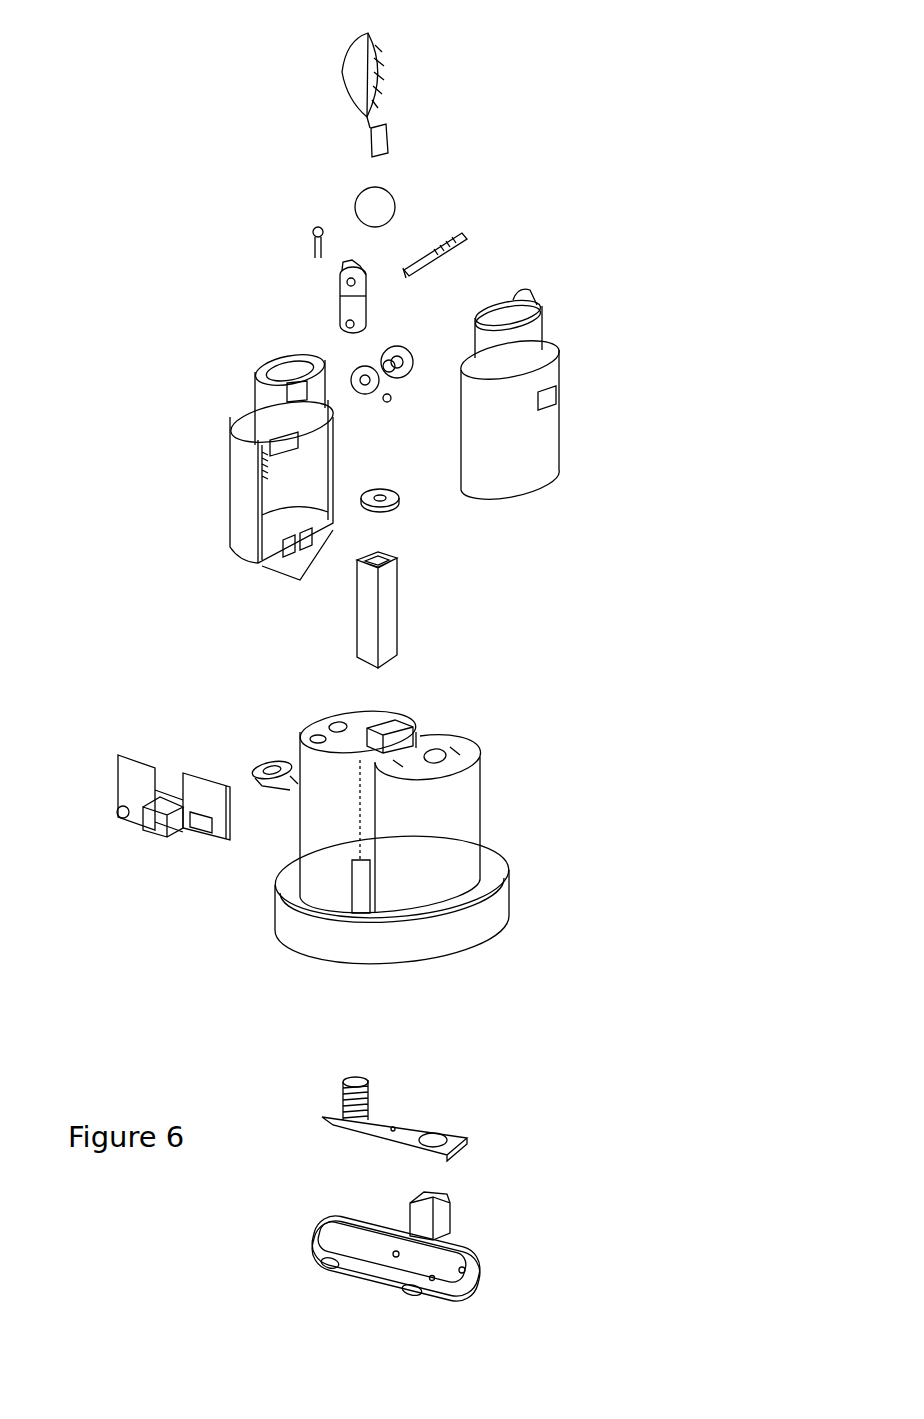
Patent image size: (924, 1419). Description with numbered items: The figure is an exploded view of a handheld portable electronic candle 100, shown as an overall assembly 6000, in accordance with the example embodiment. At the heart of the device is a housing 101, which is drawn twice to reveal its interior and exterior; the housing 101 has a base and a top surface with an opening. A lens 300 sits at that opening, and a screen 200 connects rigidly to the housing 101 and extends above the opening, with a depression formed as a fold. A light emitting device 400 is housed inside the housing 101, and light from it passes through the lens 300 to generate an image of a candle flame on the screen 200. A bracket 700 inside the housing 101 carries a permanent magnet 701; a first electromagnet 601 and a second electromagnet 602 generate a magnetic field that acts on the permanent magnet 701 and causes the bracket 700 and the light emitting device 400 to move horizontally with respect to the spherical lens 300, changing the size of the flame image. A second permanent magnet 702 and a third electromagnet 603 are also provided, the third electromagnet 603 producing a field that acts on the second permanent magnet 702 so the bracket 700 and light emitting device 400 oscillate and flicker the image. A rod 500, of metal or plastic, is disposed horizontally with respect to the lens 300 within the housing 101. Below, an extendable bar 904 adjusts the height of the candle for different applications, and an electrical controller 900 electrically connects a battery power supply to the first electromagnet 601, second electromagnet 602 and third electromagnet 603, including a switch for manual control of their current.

The lighting device assembly 6000 is at (114, 121).
The screen 200 is at (338, 72).
The lens 300 is at (356, 205).
The light emitting device 400 is at (310, 233).
The rod 500 is at (467, 230).
The bracket 700 is at (337, 303).
The permanent magnet 701 is at (384, 364).
The first electromagnet 601 is at (397, 341).
The second electromagnet 602 is at (358, 368).
The second permanent magnet 702 is at (391, 394).
The housing 101 is at (243, 404).
The handheld portable electronic candle 100 is at (196, 466).
The third electromagnet 603 is at (366, 514).
The extendable bar 904 is at (397, 575).
The electrical controller 900 is at (517, 764).